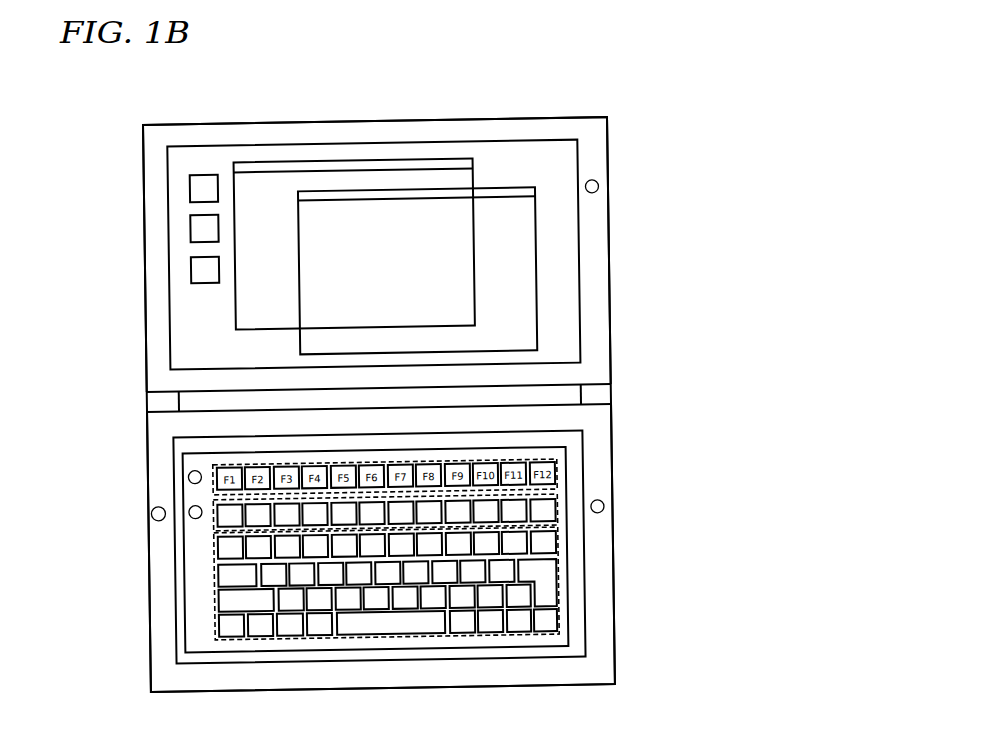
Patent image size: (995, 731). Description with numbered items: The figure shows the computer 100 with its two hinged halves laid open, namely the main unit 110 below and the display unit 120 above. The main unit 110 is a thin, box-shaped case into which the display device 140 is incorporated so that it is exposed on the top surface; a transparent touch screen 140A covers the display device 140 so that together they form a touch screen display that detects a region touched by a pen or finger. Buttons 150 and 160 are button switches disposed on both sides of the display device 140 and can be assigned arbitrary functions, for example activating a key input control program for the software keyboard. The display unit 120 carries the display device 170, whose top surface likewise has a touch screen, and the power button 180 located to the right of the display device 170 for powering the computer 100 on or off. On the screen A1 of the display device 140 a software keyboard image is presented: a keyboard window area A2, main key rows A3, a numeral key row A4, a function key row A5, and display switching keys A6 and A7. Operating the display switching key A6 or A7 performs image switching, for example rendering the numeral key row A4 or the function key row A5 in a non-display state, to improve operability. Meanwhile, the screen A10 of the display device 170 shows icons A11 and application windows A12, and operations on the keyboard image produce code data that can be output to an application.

The computer 100 is at (108, 119).
The main unit 110 is at (608, 453).
The display unit 120 is at (608, 136).
The display device (LCD) 140 is at (593, 403).
The touch screen 140A is at (569, 629).
The button 150 is at (599, 514).
The button 160 is at (146, 512).
The display device (LCD) 170 is at (560, 279).
The power button 180 is at (598, 194).
The screen A1 is at (181, 659).
The keyboard window area A2 is at (207, 606).
The main key rows A3 is at (207, 577).
The numeral key row A4 is at (208, 501).
The function key row A5 is at (183, 478).
The display switching key A6 is at (190, 520).
The display switching key A7 is at (213, 509).
The screen A10 is at (278, 160).
The icons A11 is at (202, 184).
The application windows A12 is at (400, 194).